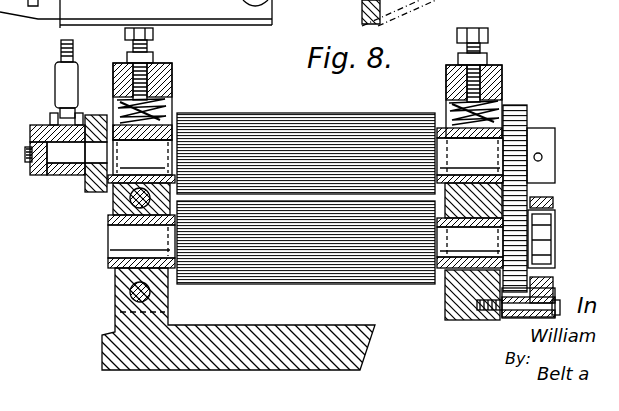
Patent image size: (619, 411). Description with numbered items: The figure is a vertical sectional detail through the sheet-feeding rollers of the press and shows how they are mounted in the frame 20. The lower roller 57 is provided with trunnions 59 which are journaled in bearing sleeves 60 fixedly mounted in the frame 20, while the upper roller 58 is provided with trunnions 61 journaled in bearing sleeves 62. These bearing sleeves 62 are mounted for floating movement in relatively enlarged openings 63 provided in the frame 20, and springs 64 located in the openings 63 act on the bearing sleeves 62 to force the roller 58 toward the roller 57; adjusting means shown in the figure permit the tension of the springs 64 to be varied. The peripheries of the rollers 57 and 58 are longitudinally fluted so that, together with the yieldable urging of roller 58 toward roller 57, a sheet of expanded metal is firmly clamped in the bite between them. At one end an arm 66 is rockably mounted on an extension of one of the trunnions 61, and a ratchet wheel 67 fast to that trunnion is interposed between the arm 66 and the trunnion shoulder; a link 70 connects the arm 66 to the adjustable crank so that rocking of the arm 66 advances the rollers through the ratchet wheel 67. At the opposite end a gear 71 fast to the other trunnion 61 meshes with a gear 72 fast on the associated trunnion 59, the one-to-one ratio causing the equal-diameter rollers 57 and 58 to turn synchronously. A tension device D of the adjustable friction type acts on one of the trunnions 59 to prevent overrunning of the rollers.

The frame 20 is at (112, 322).
The roller 57 is at (336, 285).
The roller 58 is at (372, 114).
The trunnions 59 is at (117, 241).
The bearing sleeves 60 is at (110, 221).
The trunnions 61 is at (143, 153).
The bearing sleeves 62 is at (449, 126).
The openings 63 is at (165, 110).
The springs 64 is at (135, 127).
The arm 66 is at (62, 176).
The ratchet wheel 67 is at (86, 118).
The link 70 is at (62, 78).
The gear 71 is at (528, 108).
The gear 72 is at (517, 243).
The tension device D is at (554, 206).